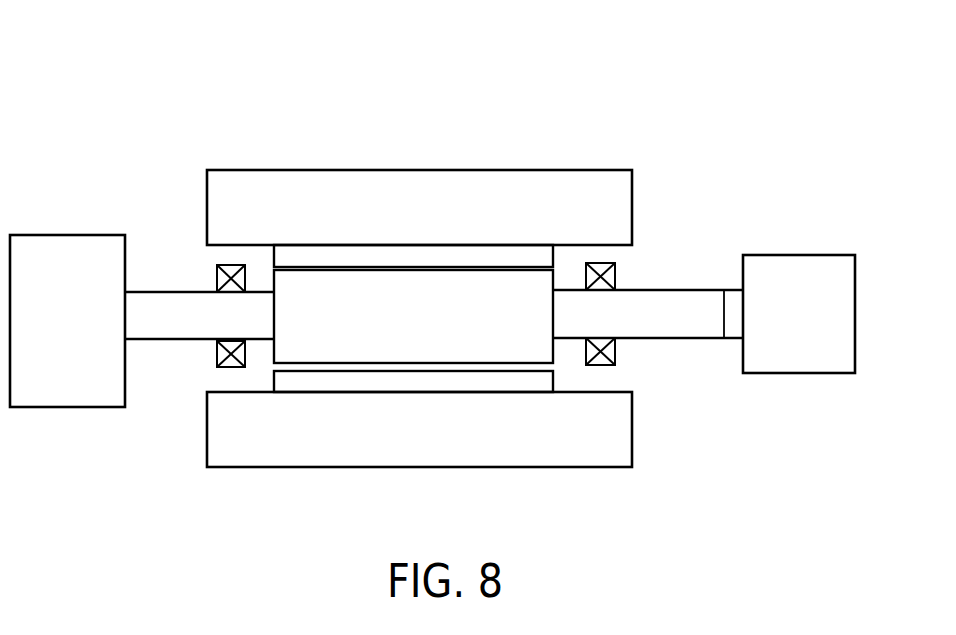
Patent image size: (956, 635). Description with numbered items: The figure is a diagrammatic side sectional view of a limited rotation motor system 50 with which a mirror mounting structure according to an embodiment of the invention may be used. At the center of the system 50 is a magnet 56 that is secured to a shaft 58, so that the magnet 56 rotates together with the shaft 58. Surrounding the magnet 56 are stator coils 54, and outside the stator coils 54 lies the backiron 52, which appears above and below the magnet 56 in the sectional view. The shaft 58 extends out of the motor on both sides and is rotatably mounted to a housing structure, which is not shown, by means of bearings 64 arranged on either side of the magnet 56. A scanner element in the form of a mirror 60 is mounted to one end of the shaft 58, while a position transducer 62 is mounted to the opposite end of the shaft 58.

The system 50 is at (131, 63).
The backiron 52 is at (504, 170).
The stator coils 54 is at (553, 252).
The magnet 56 is at (423, 332).
The shaft 58 is at (710, 337).
The mirror 60 is at (797, 255).
The position transducer 62 is at (68, 235).
The bearings 64 is at (217, 280).